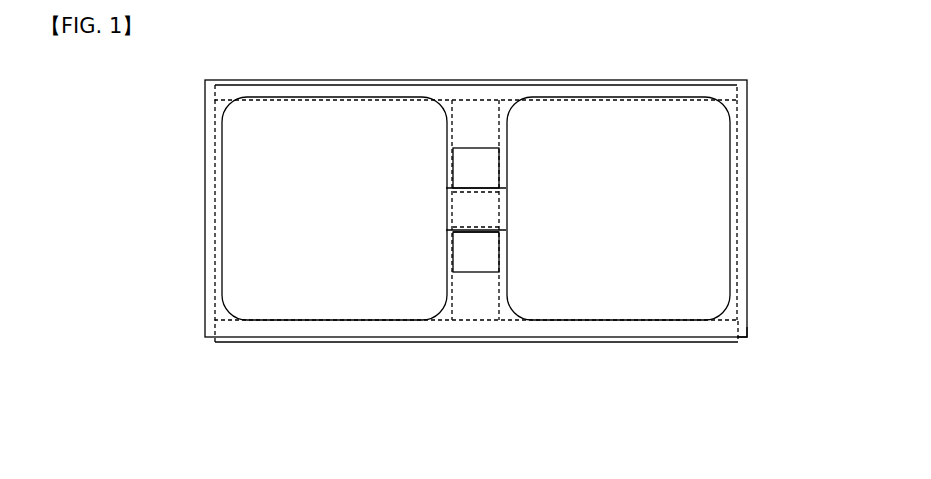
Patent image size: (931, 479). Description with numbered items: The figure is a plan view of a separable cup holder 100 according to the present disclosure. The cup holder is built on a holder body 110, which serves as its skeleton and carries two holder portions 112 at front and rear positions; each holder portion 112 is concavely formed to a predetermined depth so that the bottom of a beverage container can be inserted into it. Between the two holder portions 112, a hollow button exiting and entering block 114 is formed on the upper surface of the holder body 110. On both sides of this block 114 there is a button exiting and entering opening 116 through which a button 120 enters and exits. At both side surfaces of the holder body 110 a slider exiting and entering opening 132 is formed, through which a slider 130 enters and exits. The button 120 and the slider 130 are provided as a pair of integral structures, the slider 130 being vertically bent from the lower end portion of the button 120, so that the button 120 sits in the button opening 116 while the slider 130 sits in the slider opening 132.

The separable cup holder 100 is at (188, 225).
The holder body 110 is at (213, 153).
The holder portion 112 is at (238, 263).
The button exiting and entering block 114 is at (458, 209).
The button exiting and entering opening 116 is at (473, 233).
The button 120 is at (472, 148).
The slider 130 is at (707, 80).
The slider exiting and entering opening 132 is at (727, 340).